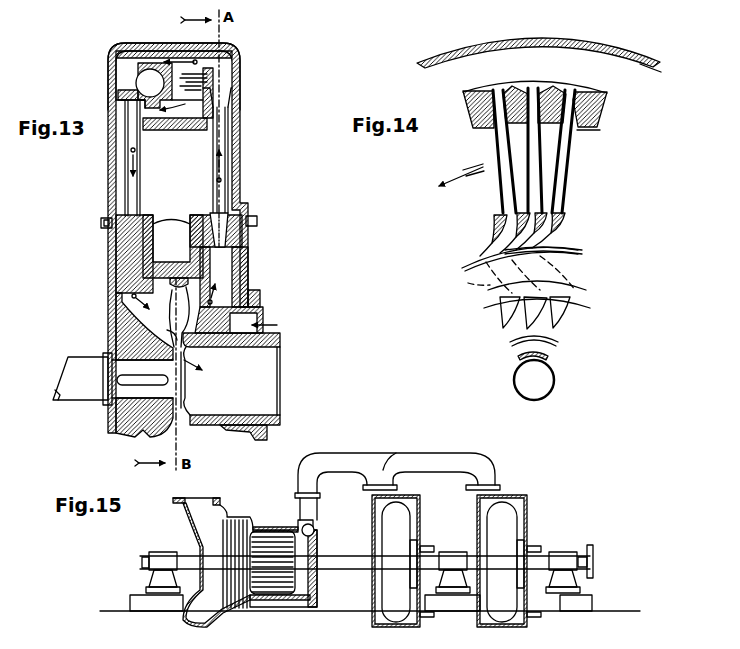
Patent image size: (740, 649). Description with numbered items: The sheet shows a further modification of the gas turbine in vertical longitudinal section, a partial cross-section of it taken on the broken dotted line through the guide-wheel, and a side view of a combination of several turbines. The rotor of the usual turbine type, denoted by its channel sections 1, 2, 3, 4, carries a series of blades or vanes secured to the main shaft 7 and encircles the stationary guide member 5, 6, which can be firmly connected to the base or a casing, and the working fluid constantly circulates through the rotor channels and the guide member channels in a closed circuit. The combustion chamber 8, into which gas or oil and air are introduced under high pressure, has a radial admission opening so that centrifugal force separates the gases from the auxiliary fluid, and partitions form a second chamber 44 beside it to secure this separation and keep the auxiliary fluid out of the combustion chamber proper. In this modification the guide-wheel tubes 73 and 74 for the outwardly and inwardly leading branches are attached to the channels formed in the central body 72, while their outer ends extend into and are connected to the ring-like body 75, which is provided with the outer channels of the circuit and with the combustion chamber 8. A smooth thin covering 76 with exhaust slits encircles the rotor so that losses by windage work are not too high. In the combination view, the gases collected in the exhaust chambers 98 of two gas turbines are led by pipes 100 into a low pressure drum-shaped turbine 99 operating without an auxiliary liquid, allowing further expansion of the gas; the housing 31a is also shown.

In FIG. 13, the rotor channel section 1 is at (229, 239).
In FIG. 14, the rotor channel section 1 is at (567, 241).
In FIG. 13, the outer channel / radial admission opening 2 is at (189, 89).
In FIG. 14, the outer channel / radial admission opening 2 is at (535, 98).
In FIG. 13, the outer channel 3 is at (130, 79).
In FIG. 13, the rotor channel section 4 is at (146, 363).
In FIG. 13, the stationary guide member 5 is at (198, 327).
In FIG. 14, the stationary guide member 5 is at (522, 307).
In FIG. 13, the stationary guide member 6 is at (236, 290).
In FIG. 14, the stationary guide member 6 is at (492, 252).
In FIG. 13, the main shaft 7 is at (113, 379).
In FIG. 13, the combustion chamber 8 is at (147, 78).
In FIG. 13, the housing 31a is at (230, 386).
In FIG. 13, the chamber 44 is at (183, 103).
In FIG. 13, the central body 72 is at (141, 255).
In FIG. 14, the central body 72 is at (502, 224).
In FIG. 13, the guide-wheel tube 73 is at (229, 148).
In FIG. 14, the guide-wheel tube 73 is at (533, 180).
In FIG. 13, the guide-wheel tube 74 is at (130, 190).
In FIG. 13, the ring-like body 75 is at (239, 57).
In FIG. 14, the ring-like body 75 is at (504, 91).
In FIG. 13, the covering 76 is at (108, 150).
In FIG. 14, the covering 76 is at (552, 44).
In FIG. 15, the exhaust chamber 98 is at (421, 516).
In FIG. 15, the drum-shaped turbine 99 is at (275, 588).
In FIG. 15, the pipe 100 is at (425, 464).